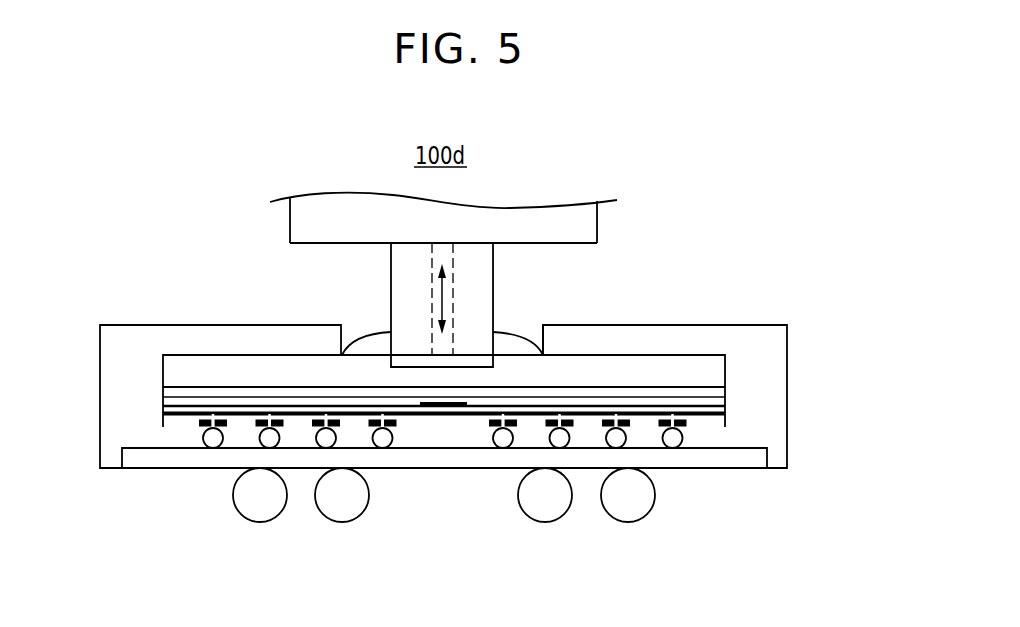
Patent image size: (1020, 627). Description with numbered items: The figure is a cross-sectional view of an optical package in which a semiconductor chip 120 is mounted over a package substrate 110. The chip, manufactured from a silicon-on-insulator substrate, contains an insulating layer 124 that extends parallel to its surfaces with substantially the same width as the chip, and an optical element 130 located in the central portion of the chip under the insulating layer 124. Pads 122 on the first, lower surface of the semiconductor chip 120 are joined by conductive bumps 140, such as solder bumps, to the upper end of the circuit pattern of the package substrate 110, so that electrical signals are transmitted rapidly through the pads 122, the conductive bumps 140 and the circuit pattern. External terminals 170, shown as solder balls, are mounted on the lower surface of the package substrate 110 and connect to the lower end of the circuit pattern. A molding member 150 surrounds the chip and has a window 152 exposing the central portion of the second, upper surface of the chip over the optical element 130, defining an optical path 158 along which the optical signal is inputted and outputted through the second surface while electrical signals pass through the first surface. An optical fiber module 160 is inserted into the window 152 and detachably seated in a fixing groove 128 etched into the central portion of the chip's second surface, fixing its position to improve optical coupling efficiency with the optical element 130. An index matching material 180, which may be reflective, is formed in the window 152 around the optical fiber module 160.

The package substrate 110 is at (760, 458).
The semiconductor chip 120 is at (722, 366).
The pads 122 is at (163, 415).
The insulating layer 124 is at (722, 393).
The fixing groove 128 is at (398, 362).
The optical element 130 is at (440, 407).
The conductive bumps 140 is at (676, 439).
The molding member 150 is at (773, 341).
The window 152 is at (503, 332).
The optical path 158 is at (442, 288).
The optical fiber module 160 is at (391, 265).
The external terminals 170 is at (638, 500).
The index matching material 180 is at (513, 347).